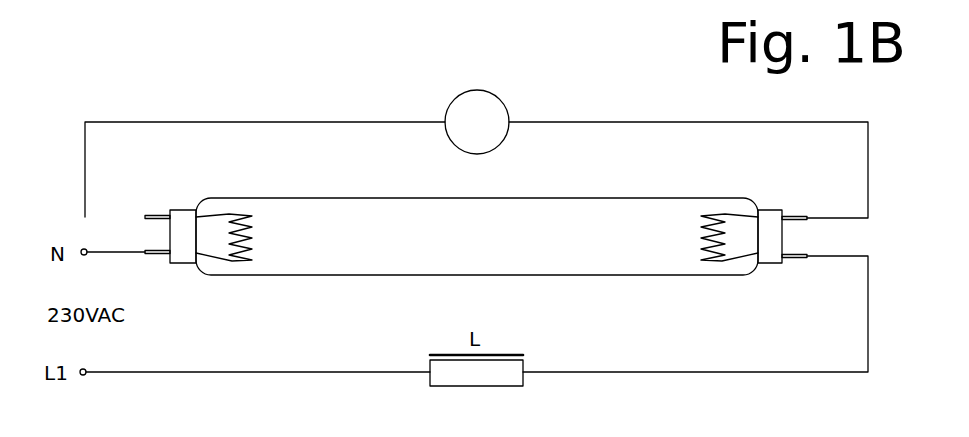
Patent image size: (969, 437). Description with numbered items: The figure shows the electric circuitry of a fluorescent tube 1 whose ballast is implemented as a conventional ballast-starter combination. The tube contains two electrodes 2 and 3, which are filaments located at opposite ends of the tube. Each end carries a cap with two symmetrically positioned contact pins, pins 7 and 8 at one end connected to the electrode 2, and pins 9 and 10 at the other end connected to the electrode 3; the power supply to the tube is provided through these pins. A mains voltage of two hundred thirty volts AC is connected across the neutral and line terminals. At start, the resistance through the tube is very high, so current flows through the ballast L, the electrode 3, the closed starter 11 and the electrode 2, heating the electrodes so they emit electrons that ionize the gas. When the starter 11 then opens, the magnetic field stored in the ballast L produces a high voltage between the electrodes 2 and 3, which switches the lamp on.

The fluorescent lamp tube 1 is at (579, 284).
The electrode 2 is at (222, 262).
The electrode 3 is at (734, 262).
The contact pin 7 is at (158, 216).
The contact pin 8 is at (157, 258).
The contact pin 9 is at (802, 218).
The contact pin 10 is at (803, 259).
The starter 11 is at (500, 94).